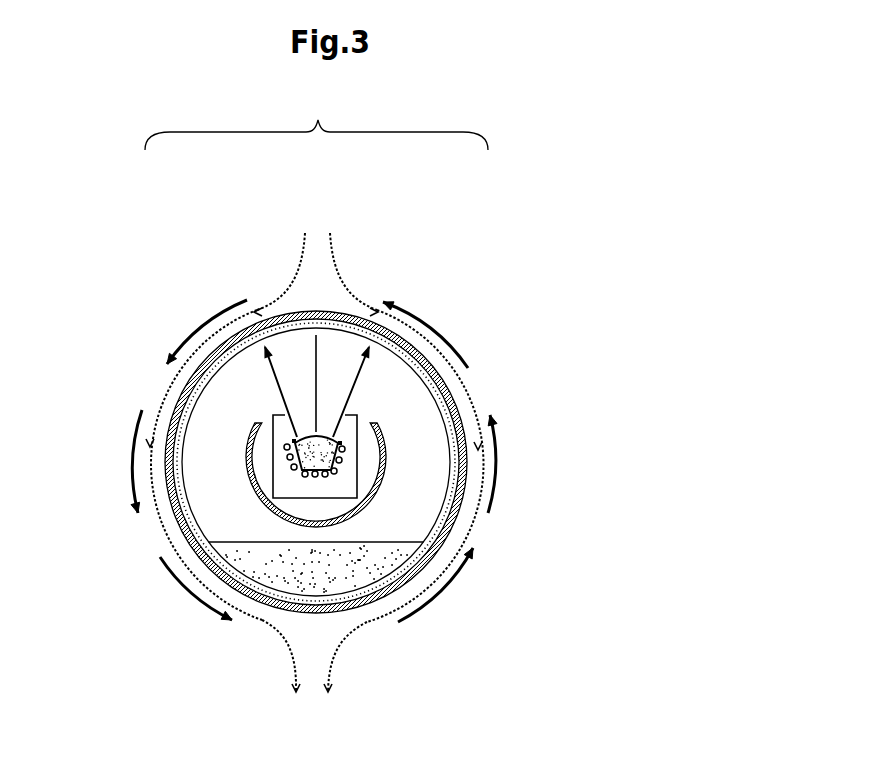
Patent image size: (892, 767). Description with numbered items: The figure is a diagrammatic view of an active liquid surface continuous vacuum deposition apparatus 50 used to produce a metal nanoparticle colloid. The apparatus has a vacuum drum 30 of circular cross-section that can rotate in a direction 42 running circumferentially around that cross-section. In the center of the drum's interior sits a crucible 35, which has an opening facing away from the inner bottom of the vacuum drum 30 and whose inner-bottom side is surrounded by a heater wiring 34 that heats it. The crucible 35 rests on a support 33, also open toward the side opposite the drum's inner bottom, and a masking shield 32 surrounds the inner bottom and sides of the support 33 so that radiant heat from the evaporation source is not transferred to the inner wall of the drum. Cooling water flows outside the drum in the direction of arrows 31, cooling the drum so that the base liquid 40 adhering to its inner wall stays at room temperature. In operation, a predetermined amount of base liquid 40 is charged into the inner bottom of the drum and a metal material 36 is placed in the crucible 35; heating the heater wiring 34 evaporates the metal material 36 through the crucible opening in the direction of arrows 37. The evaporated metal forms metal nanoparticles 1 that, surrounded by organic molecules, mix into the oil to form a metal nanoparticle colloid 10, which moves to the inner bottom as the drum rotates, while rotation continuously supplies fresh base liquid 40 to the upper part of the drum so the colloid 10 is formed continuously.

The metal nanoparticles 1 is at (258, 327).
The metal nanoparticle colloid 10 is at (177, 522).
The vacuum drum 30 is at (170, 486).
The arrows indicating cooling water flow direction 31 is at (345, 293).
The masking shield 32 is at (247, 437).
The support 33 is at (352, 474).
The heater wiring 34 is at (338, 464).
The crucible 35 is at (343, 450).
The metal material 36 is at (321, 447).
The arrows indicating evaporation direction 37 is at (318, 386).
The base liquid 40 is at (358, 468).
The rotation direction 42 is at (435, 605).
The active liquid surface continuous vacuum deposition apparatus 50 is at (316, 122).